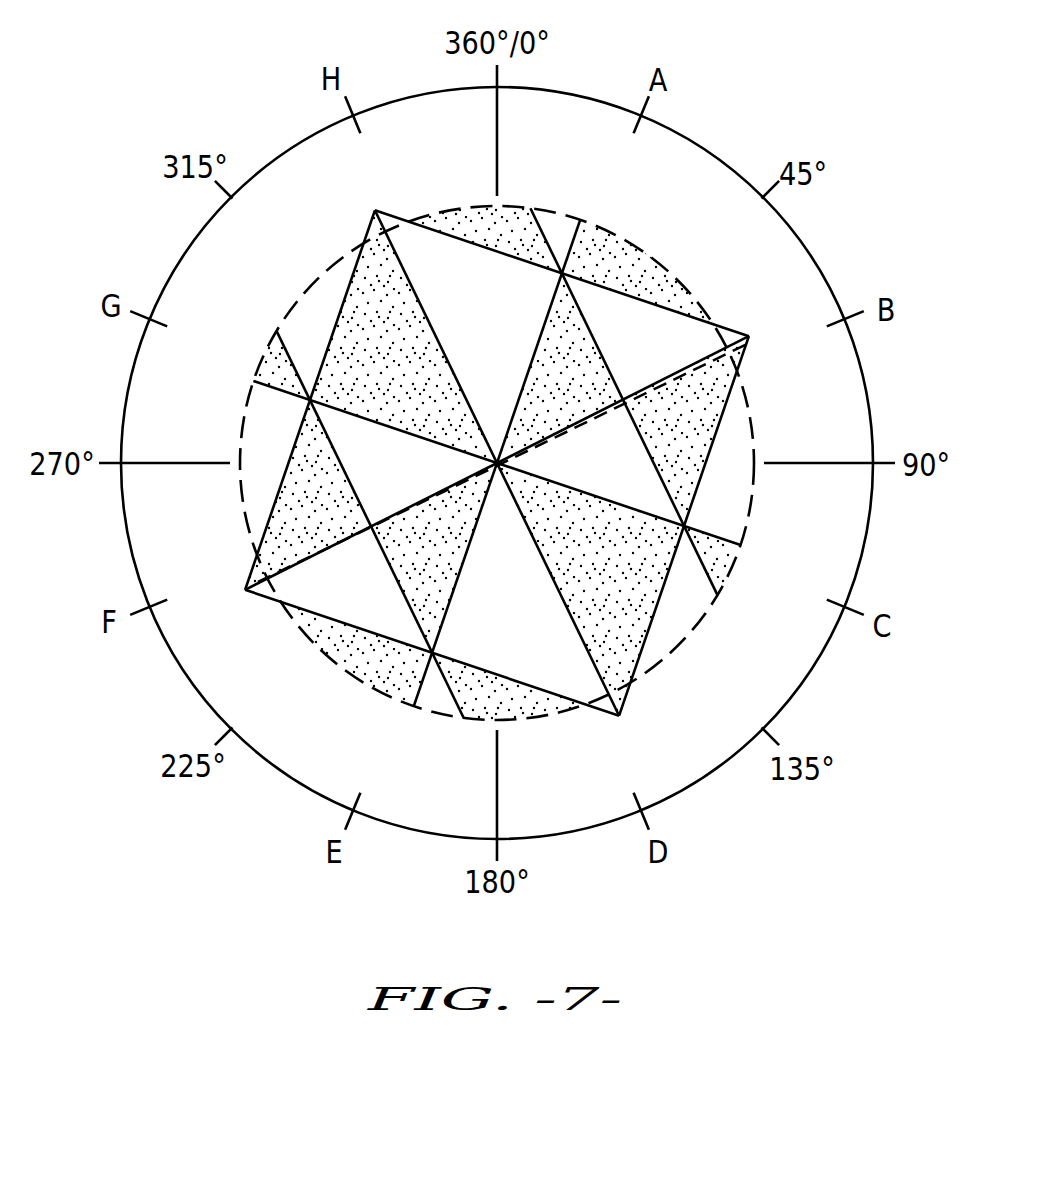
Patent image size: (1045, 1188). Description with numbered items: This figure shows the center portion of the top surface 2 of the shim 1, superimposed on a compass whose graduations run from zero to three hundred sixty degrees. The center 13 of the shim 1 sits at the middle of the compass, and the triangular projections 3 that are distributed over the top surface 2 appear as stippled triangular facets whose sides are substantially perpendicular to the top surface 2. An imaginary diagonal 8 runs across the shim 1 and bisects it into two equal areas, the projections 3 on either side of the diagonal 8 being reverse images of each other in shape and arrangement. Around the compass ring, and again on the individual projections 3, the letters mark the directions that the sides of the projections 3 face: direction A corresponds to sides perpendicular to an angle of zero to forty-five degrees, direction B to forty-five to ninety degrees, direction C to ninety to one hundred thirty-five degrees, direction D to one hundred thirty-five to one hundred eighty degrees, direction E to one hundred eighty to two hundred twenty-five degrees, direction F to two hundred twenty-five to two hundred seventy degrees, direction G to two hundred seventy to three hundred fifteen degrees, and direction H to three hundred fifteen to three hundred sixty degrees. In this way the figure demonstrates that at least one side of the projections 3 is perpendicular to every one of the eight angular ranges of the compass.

The shim 1 is at (737, 318).
The top surface 2 is at (332, 288).
The projections 3 is at (620, 507).
The imaginary diagonal 8 is at (286, 578).
The center 13 is at (752, 420).
The direction A is at (584, 491).
The direction B is at (609, 366).
The direction C is at (698, 492).
The direction D is at (586, 424).
The direction E is at (405, 435).
The direction F is at (646, 445).
The direction G is at (525, 374).
The direction H is at (654, 387).